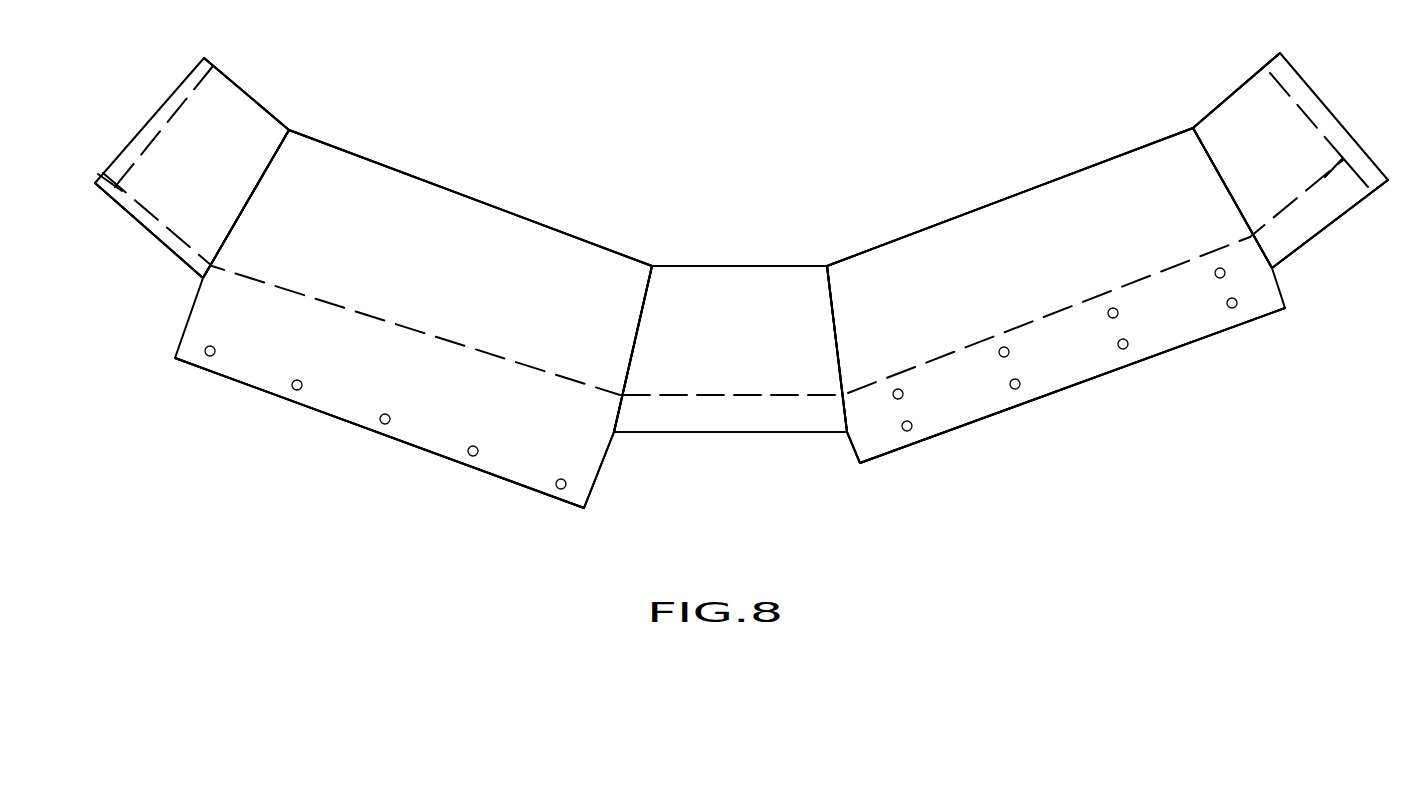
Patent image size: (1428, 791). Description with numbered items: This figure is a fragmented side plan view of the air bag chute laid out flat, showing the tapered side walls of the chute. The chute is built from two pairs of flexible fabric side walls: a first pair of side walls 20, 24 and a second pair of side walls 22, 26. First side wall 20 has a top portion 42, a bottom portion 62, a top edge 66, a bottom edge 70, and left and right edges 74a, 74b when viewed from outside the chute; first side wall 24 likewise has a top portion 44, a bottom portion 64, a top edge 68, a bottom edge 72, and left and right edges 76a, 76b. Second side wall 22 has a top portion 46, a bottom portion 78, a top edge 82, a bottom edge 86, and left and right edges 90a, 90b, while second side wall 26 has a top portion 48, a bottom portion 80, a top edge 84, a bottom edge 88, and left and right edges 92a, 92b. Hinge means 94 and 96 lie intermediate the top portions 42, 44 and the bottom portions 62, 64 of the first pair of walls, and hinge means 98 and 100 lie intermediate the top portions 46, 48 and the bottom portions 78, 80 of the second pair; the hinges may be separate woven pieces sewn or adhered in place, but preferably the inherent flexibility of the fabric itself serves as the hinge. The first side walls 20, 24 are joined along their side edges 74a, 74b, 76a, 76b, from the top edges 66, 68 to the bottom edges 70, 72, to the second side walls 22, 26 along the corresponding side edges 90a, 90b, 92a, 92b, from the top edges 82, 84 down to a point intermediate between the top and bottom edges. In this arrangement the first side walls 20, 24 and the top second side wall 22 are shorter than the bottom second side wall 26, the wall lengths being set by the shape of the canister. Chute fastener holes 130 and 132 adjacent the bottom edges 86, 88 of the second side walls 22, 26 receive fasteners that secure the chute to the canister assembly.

The first side wall 20 is at (112, 198).
The second side wall 22 is at (1100, 375).
The first side wall 24 is at (713, 432).
The second side wall 26 is at (459, 462).
The top portion 42 is at (260, 120).
The top portion 44 is at (755, 272).
The top portion 46 is at (912, 234).
The top portion 48 is at (460, 194).
The bottom portion 62 is at (157, 236).
The bottom portion 64 is at (653, 417).
The top edge 66 is at (237, 86).
The top edge 68 is at (699, 265).
The bottom edge 70 is at (180, 262).
The bottom edge 72 is at (770, 433).
The left edge 74a is at (1215, 167).
The right edge 74b is at (261, 178).
The left edge 76a is at (645, 317).
The right edge 76b is at (837, 352).
The bottom portion 78 is at (1013, 407).
The bottom portion 80 is at (325, 397).
The top edge 82 is at (1003, 199).
The top edge 84 is at (552, 228).
The bottom edge 86 is at (1133, 364).
The bottom edge 88 is at (503, 478).
The left edge 90a is at (836, 322).
The right edge 90b is at (1230, 195).
The left edge 92a is at (242, 212).
The right edge 92b is at (619, 410).
The hinge means 94 is at (100, 182).
The hinge means 96 is at (798, 396).
The hinge means 98 is at (988, 333).
The hinge means 100 is at (425, 328).
The chute fastener hole 130 is at (1232, 308).
The chute fastener hole 132 is at (385, 425).